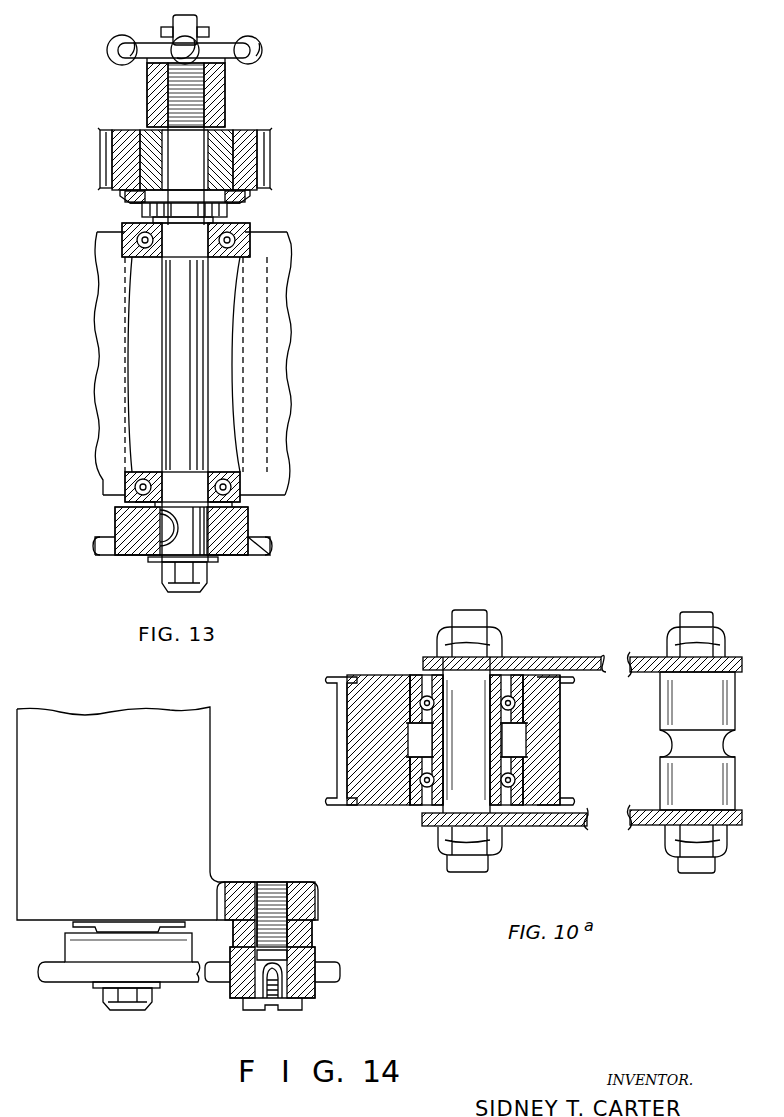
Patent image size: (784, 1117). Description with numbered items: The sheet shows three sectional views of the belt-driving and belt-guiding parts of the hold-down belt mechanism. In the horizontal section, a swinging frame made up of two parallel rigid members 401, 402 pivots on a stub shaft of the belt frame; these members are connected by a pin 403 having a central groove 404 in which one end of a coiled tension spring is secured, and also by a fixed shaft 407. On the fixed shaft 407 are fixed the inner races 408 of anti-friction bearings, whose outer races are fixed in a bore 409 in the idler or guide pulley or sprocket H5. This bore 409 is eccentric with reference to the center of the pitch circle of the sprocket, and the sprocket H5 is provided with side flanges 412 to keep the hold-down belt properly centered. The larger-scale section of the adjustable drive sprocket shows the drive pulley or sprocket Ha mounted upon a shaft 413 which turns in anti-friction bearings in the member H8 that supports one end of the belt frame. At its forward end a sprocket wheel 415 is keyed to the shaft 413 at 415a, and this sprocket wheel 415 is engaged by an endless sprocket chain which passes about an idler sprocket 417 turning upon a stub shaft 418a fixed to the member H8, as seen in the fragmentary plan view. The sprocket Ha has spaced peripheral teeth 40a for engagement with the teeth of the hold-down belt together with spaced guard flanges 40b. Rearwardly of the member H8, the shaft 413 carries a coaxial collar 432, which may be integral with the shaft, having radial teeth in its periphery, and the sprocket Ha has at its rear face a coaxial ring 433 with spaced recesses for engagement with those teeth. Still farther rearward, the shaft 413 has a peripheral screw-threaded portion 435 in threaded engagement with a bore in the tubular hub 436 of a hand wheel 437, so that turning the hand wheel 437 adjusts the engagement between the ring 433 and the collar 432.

In FIG. 13, the hand wheel 437 is at (150, 48).
In FIG. 13, the tubular hub 436 is at (147, 93).
In FIG. 13, the screw-threaded portion 435 is at (192, 110).
In FIG. 13, the peripheral teeth 40a is at (112, 158).
In FIG. 13, the guard flanges 40b is at (270, 131).
In FIG. 13, the drive pulley or sprocket Ha is at (84, 141).
In FIG. 13, the coaxial ring 433 is at (245, 199).
In FIG. 13, the coaxial collar 432 is at (228, 210).
In FIG. 13, the member H8 is at (262, 364).
In FIG. 14, the member H8 is at (190, 805).
In FIG. 13, the shaft 413 is at (175, 372).
In FIG. 14, the shaft 413 is at (132, 1012).
In FIG. 13, the sprocket wheel 415 is at (235, 562).
In FIG. 14, the sprocket wheel 415 is at (72, 975).
In FIG. 13, the key 415a is at (163, 567).
In FIG. 14, the idler sprocket 417 is at (315, 992).
In FIG. 14, the stub shaft 418a is at (262, 998).
In FIG. 10a, the rigid member 401 is at (521, 637).
In FIG. 10a, the rigid member 402 is at (573, 827).
In FIG. 10a, the fixed shaft 407 is at (482, 610).
In FIG. 10a, the inner races 408 is at (507, 670).
In FIG. 10a, the bore 409 is at (520, 745).
In FIG. 10a, the side flanges 412 is at (345, 677).
In FIG. 10a, the idler or guide pulley or sprocket H5 is at (347, 747).
In FIG. 10a, the pin 403 is at (677, 708).
In FIG. 10a, the central groove 404 is at (668, 743).